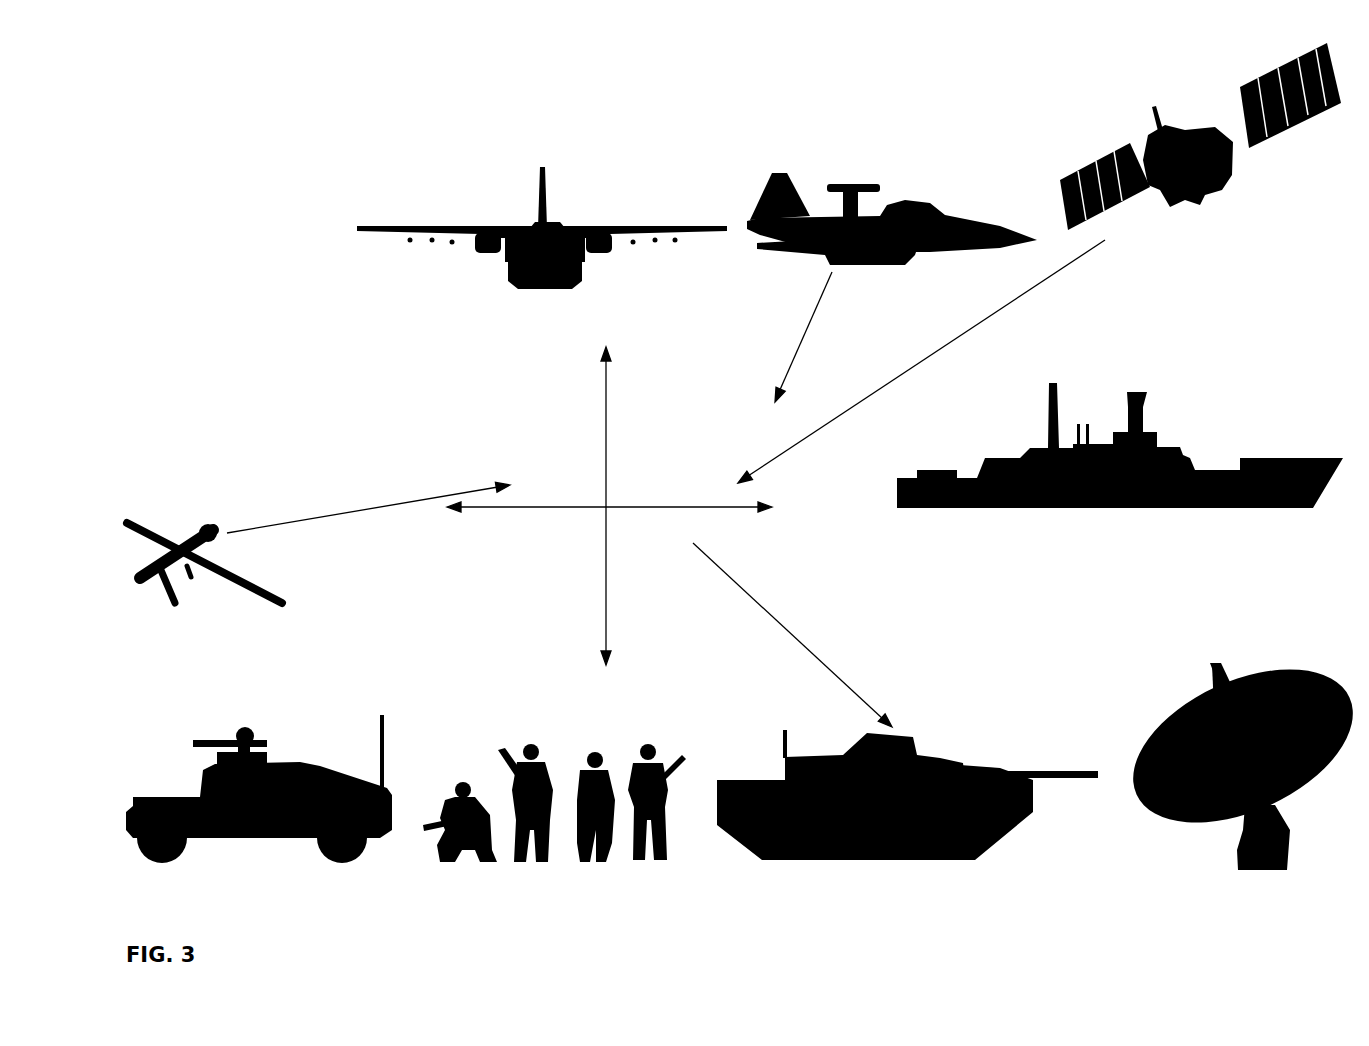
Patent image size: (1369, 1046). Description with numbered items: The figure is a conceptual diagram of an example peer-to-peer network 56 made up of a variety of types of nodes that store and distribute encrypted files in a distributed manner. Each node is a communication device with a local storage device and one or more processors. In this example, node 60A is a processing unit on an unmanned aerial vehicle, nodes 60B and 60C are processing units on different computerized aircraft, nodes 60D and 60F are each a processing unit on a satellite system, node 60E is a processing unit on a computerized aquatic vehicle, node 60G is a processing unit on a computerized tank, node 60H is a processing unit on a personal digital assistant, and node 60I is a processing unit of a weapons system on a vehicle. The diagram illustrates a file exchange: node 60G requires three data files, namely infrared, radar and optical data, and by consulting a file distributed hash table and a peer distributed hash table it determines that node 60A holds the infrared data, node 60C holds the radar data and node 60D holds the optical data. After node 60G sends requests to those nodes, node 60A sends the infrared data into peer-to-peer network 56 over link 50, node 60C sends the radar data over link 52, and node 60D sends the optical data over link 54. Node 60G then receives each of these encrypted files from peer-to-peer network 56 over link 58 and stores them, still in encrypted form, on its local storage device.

The link 50 is at (345, 510).
The link 52 is at (800, 345).
The link 54 is at (935, 352).
The peer-to-peer network 56 is at (597, 505).
The link 58 is at (800, 642).
The node 60A is at (210, 528).
The node 60B is at (530, 227).
The node 60C is at (775, 178).
The node 60D is at (1246, 89).
The node 60E is at (1048, 432).
The node 60F is at (1213, 667).
The node 60G is at (782, 740).
The node 60H is at (530, 748).
The node 60I is at (243, 730).